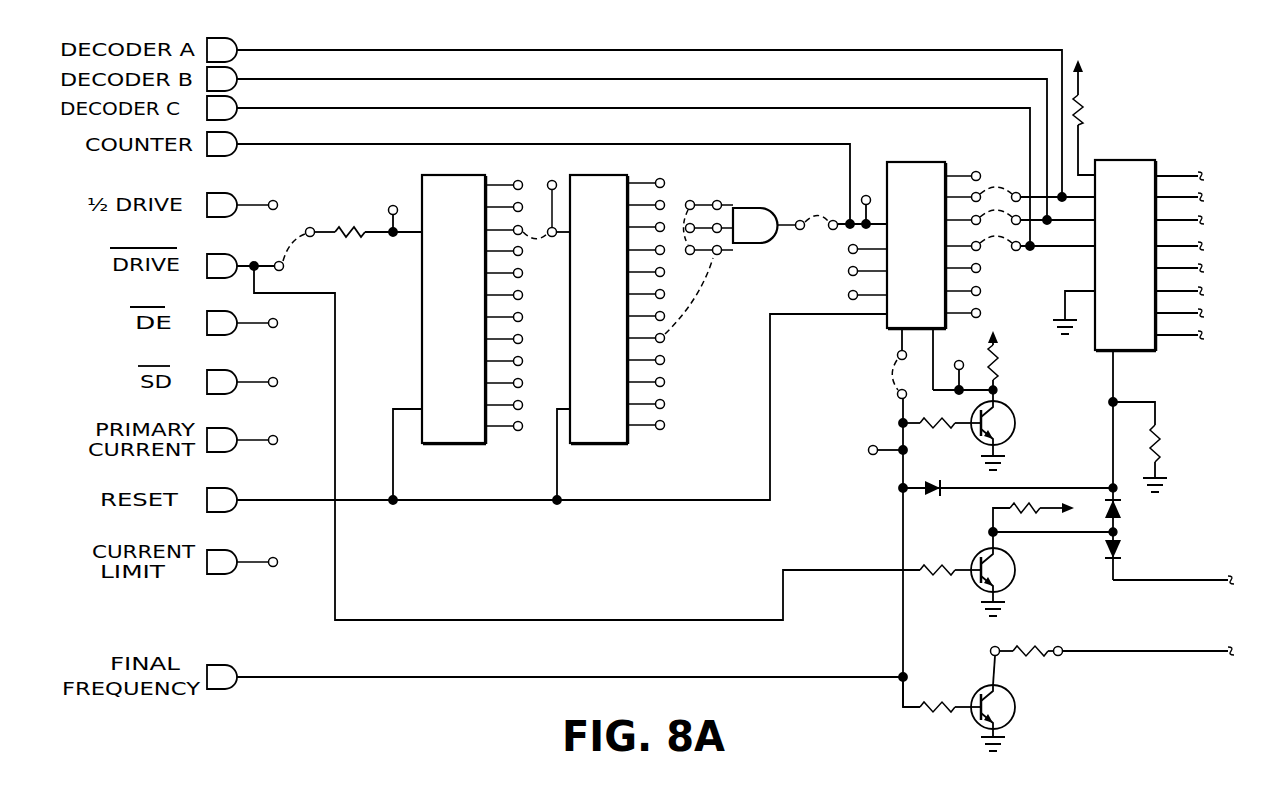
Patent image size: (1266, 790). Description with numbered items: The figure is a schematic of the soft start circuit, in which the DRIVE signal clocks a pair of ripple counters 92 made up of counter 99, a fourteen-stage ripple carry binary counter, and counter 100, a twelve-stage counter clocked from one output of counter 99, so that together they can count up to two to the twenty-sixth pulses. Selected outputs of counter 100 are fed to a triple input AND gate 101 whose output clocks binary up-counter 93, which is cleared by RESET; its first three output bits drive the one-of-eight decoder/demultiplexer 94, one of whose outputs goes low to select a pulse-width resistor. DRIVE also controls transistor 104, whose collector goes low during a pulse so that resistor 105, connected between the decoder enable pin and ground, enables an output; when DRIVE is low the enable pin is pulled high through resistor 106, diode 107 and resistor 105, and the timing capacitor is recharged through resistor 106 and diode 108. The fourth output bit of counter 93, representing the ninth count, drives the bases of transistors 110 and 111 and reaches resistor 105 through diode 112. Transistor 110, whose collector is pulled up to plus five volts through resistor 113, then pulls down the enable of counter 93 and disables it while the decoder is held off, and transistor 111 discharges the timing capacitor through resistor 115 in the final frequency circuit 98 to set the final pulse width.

The ripple counters 92 is at (558, 34).
The binary up-counter 93 is at (905, 162).
The decoder/demultiplexer 94 is at (1118, 160).
The final frequency circuit 98 is at (962, 732).
The counter 99 is at (422, 333).
The counter 100 is at (598, 445).
The triple input AND gate 101 is at (740, 250).
The transistor 104 is at (1013, 575).
The resistor 105 is at (1160, 440).
The resistor 106 is at (1030, 506).
The diode 107 is at (1122, 512).
The diode 108 is at (1122, 552).
The transistor 110 is at (1022, 403).
The transistor 111 is at (1013, 698).
The diode 112 is at (940, 496).
The resistor 113 is at (1000, 358).
The resistor 115 is at (1020, 646).